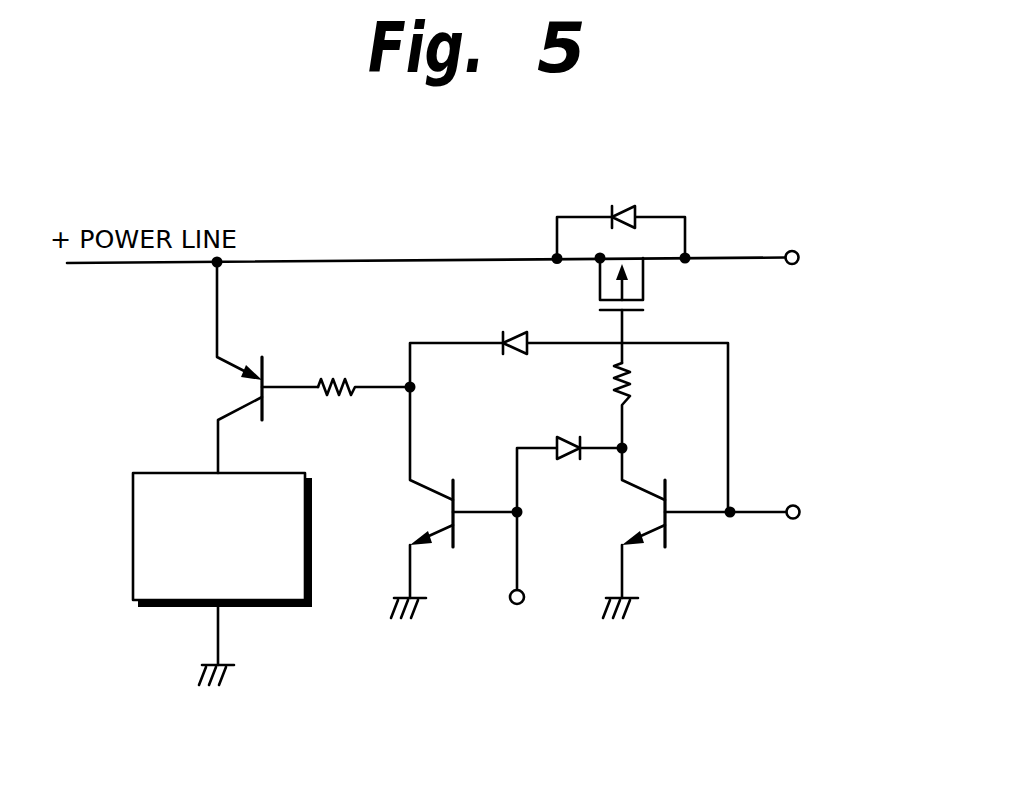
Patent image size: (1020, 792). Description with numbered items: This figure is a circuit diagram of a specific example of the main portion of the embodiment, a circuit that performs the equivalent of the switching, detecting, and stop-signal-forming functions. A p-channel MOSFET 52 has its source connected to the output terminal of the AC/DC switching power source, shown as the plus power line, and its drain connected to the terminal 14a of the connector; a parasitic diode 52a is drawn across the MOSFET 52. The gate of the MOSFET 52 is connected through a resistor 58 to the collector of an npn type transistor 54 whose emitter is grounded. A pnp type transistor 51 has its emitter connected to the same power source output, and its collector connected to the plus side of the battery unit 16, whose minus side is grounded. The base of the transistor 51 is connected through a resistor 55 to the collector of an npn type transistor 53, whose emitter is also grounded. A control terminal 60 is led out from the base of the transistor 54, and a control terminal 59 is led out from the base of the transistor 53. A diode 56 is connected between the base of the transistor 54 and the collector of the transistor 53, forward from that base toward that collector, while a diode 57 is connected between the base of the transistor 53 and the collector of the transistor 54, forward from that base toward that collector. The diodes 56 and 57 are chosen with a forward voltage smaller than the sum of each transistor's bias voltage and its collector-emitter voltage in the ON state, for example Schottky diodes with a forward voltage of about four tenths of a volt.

The terminal 14a is at (800, 258).
The battery unit 16 is at (178, 473).
The pnp type transistor 51 is at (228, 388).
The MOSFET 52 is at (648, 282).
The parasitic diode 52a is at (635, 208).
The npn type transistor 53 is at (420, 513).
The npn type transistor 54 is at (632, 514).
The resistor 55 is at (335, 372).
The diode 56 is at (512, 337).
The diode 57 is at (572, 436).
The resistor 58 is at (638, 388).
The control terminal 59 is at (517, 605).
The control terminal 60 is at (803, 512).